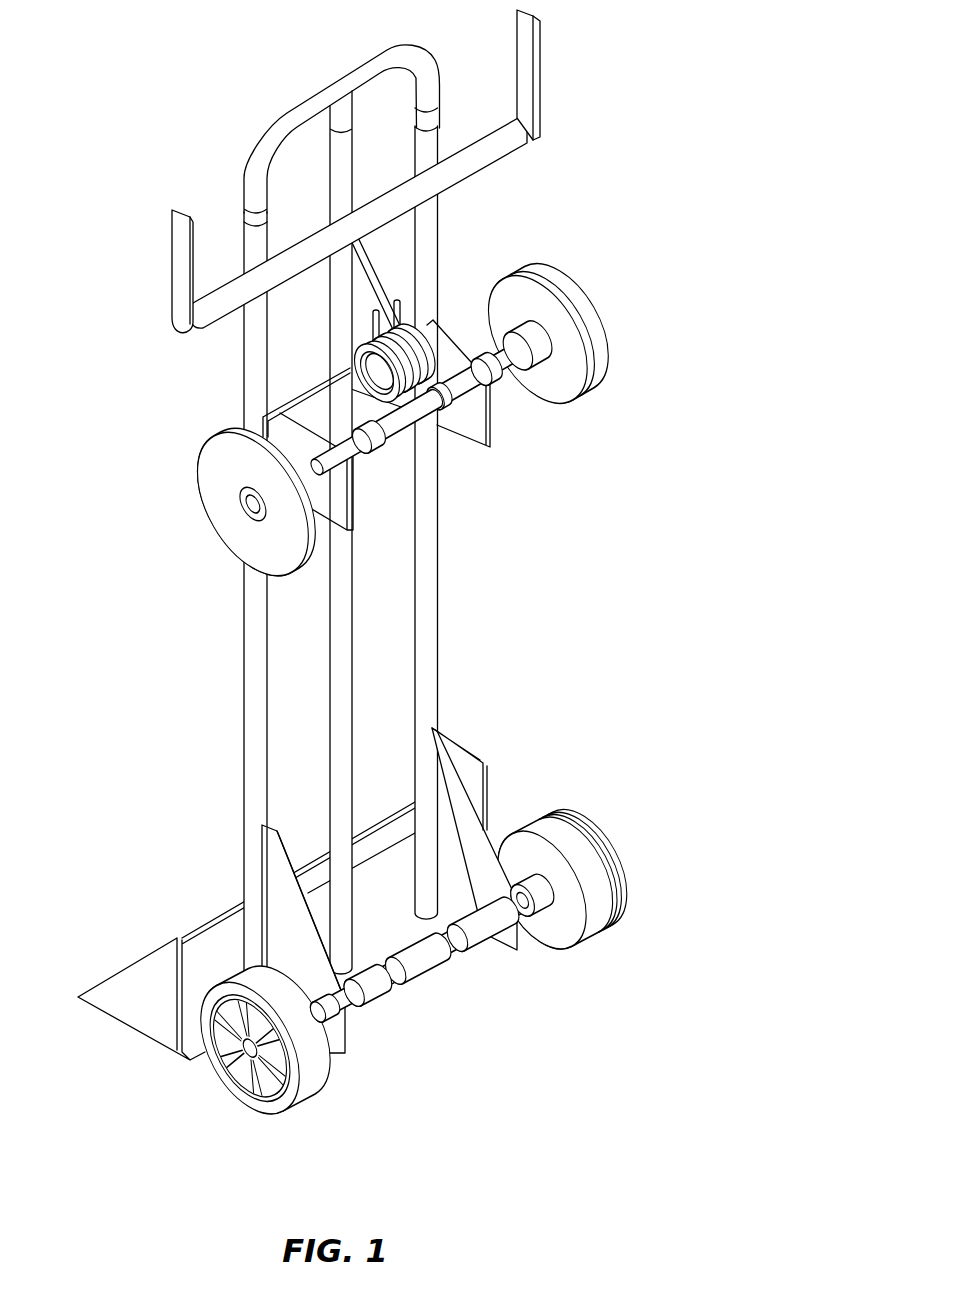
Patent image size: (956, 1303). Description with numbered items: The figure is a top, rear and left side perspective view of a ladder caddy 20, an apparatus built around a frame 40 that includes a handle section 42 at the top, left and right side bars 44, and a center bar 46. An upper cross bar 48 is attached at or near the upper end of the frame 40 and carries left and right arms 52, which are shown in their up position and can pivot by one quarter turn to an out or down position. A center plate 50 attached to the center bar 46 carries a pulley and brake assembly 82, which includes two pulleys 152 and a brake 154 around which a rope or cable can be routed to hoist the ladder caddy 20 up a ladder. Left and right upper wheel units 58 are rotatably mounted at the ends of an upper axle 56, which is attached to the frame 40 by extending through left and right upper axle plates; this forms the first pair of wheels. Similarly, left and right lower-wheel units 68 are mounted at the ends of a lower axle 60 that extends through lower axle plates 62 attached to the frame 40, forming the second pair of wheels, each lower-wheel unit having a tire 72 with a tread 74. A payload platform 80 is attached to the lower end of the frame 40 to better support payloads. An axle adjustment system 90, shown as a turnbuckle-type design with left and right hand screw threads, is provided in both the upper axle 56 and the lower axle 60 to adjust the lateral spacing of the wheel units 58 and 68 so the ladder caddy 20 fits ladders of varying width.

The ladder caddy 20 is at (370, 594).
The frame 40 is at (319, 511).
The handle section 42 is at (313, 90).
The left and right side bars 44 is at (259, 333).
The center bar 46 is at (338, 340).
The upper cross bar 48 is at (483, 138).
The center plate 50 is at (360, 277).
The left and right arms 52 is at (180, 269).
The upper axle 56 is at (392, 458).
The upper wheel units 58 is at (588, 298).
The lower axle 60 is at (397, 1004).
The lower axle plates 62 is at (452, 827).
The lower-wheel units 68 is at (600, 830).
The tire 72 is at (607, 905).
The tread 74 is at (590, 937).
The payload platform 80 is at (127, 980).
The pulley and brake assembly 82 is at (340, 371).
The axle adjustment system 90 is at (443, 417).
The pulleys 152 is at (455, 338).
The brake 154 is at (217, 480).